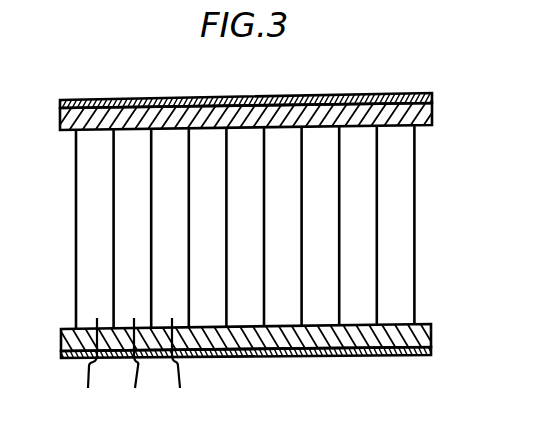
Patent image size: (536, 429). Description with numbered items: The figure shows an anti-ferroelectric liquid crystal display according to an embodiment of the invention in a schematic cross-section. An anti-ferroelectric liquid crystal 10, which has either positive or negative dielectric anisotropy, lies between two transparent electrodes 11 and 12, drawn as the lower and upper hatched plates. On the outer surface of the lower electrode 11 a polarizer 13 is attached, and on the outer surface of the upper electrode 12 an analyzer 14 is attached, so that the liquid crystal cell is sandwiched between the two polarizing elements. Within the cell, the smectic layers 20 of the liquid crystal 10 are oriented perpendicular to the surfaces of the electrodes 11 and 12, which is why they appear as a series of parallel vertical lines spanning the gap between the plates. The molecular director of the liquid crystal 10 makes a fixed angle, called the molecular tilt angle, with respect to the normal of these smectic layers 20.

The anti-ferroelectric liquid crystal 10 is at (440, 322).
The transparent electrode 11 is at (420, 337).
The transparent electrode 12 is at (424, 113).
The polarizer 13 is at (424, 352).
The analyzer 14 is at (430, 96).
The smectic layers 20 is at (135, 366).